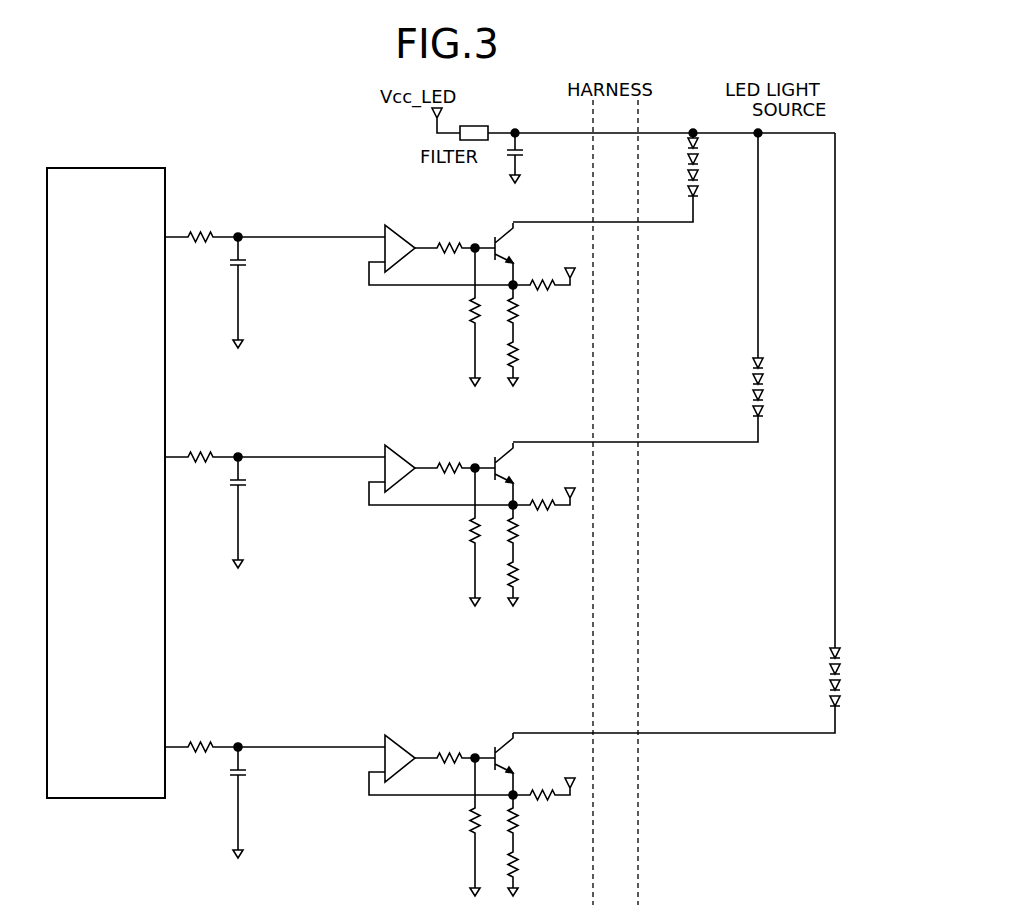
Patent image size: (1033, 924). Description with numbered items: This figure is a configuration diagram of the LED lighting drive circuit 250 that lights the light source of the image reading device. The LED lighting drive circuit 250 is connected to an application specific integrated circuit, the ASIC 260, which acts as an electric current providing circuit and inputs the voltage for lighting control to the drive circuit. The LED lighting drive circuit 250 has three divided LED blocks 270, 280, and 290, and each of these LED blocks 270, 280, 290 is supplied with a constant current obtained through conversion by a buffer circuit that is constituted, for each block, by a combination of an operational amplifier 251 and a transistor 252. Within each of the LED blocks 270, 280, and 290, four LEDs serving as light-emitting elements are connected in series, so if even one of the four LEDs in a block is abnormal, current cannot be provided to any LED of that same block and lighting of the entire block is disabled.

The LED lighting drive circuit 250 is at (263, 198).
The operational amplifier 251 is at (365, 178).
The transistor 252 is at (558, 185).
The application specific integrated circuit (ASIC) 260 is at (146, 166).
The LED block 270 is at (709, 182).
The LED block 280 is at (778, 359).
The LED block 290 is at (820, 648).